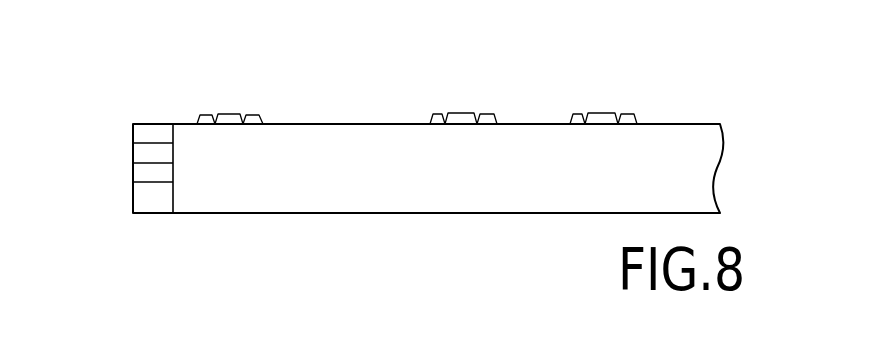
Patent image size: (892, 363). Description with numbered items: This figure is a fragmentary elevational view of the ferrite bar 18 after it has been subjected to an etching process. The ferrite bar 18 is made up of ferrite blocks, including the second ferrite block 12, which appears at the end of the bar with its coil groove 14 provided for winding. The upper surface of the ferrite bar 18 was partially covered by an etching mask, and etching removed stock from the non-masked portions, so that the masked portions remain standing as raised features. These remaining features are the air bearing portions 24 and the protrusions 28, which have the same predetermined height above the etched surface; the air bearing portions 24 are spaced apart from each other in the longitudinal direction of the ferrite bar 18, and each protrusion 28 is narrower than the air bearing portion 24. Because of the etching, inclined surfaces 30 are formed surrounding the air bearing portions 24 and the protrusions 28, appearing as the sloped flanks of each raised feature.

The second ferrite block 12 is at (353, 203).
The coil groove 14 is at (150, 167).
The ferrite bar 18 is at (138, 118).
The air bearing portion 24 is at (248, 126).
The protrusion 28 is at (231, 126).
The inclined surface 30 is at (196, 121).